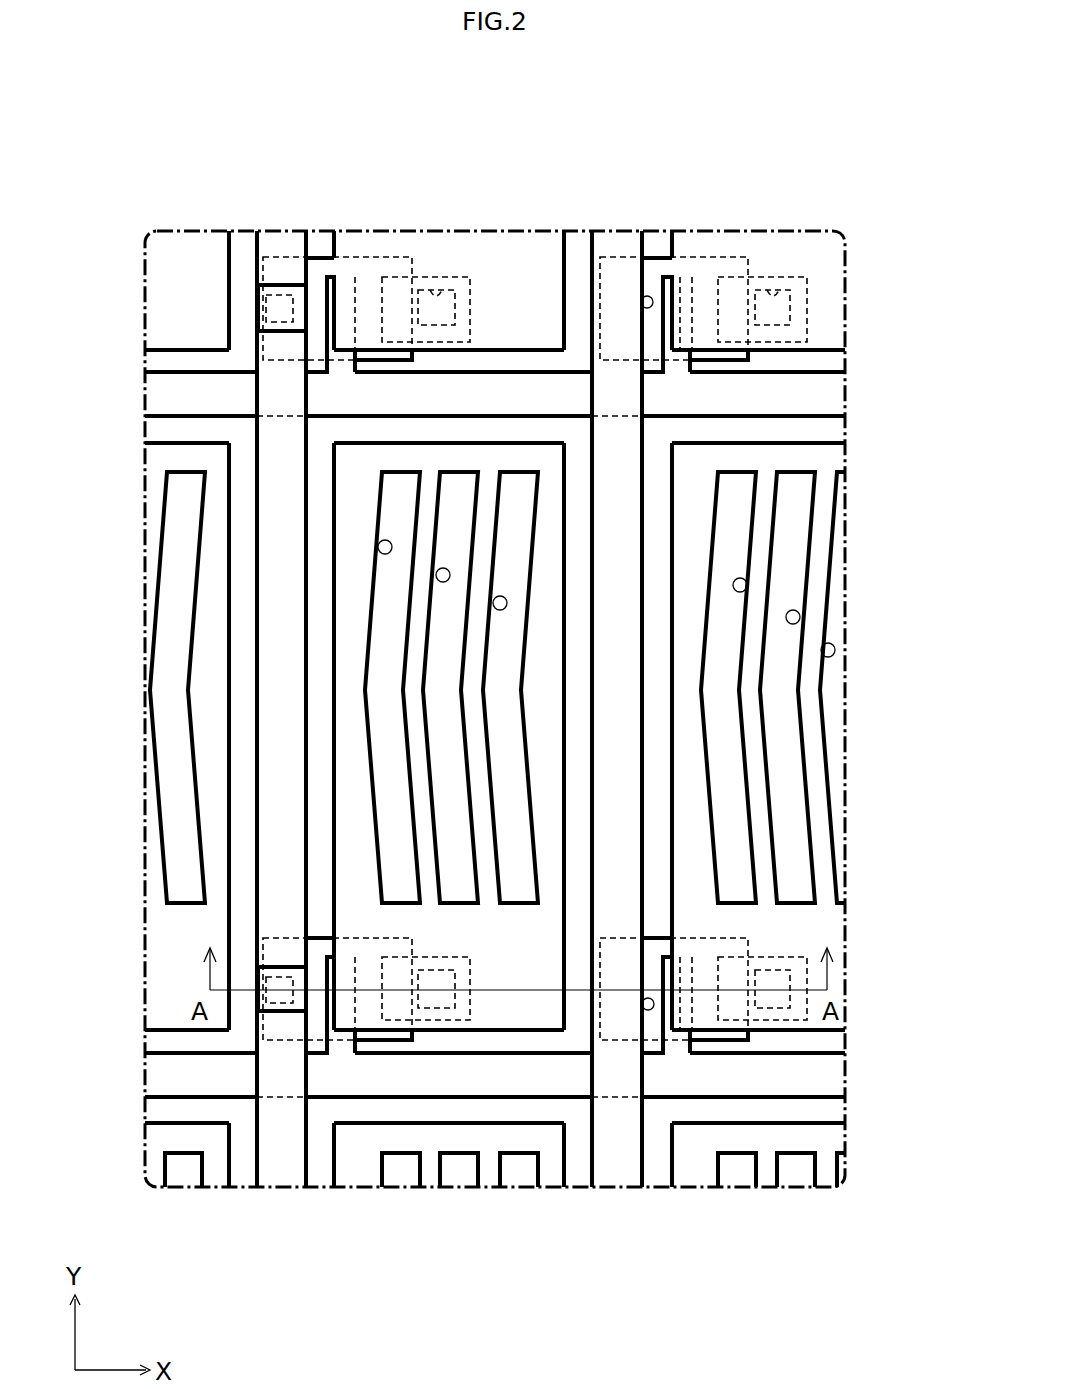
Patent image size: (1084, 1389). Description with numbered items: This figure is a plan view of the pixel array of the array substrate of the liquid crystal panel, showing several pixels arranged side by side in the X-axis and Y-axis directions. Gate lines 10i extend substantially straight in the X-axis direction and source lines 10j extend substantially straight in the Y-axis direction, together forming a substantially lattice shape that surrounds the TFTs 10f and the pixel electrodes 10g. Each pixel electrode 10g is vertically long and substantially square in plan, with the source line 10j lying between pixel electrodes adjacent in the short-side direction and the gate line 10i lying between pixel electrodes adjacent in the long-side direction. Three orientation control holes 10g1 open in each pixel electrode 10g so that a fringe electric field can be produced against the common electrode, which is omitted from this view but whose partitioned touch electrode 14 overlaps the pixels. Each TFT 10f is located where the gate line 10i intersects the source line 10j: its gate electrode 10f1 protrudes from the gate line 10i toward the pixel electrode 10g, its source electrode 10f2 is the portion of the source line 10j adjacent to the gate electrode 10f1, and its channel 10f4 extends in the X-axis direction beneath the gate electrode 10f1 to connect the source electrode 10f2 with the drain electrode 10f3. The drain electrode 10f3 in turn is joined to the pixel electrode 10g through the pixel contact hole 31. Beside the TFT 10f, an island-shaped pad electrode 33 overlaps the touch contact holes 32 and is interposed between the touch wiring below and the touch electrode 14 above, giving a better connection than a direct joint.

The TFT 10f is at (328, 262).
The gate electrode 10f1 is at (332, 277).
The source electrode 10f2 is at (644, 296).
The drain electrode 10f3 is at (466, 277).
The channel 10f4 is at (380, 257).
The pixel electrode 10g is at (570, 243).
The orientation control hole 10g1 is at (493, 604).
The gate line 10i is at (178, 372).
The source line 10j is at (642, 530).
The touch electrode 14 is at (227, 698).
The pixel contact hole 31 is at (437, 290).
The touch contact hole 32 is at (283, 295).
The pad electrode 33 is at (270, 285).